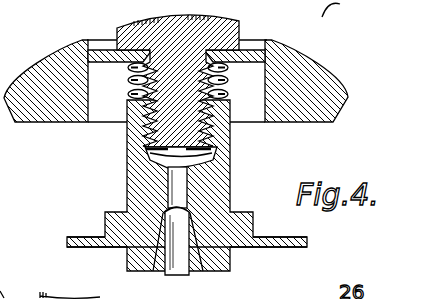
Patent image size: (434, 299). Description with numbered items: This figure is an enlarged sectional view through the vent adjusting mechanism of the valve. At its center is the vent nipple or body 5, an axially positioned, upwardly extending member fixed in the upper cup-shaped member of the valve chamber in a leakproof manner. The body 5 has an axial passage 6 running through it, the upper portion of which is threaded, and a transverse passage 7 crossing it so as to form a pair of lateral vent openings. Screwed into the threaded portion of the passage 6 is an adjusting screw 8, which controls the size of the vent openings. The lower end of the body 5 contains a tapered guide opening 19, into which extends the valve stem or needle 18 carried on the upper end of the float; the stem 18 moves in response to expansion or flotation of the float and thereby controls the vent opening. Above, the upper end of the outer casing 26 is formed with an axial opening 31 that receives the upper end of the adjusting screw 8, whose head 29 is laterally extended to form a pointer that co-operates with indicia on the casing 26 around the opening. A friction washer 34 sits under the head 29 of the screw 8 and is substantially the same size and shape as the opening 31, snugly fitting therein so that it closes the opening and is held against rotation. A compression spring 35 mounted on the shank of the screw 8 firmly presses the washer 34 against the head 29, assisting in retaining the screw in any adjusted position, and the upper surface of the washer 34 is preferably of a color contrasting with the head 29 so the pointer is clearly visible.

The vent nipple or body 5 is at (128, 178).
The axial passage 6 is at (182, 181).
The transverse passage 7 is at (185, 150).
The adjusting screw 8 is at (212, 38).
The valve stem or needle 18 is at (188, 276).
The tapered guide opening 19 is at (243, 206).
The outer casing 26 is at (193, 75).
The knob 29 is at (119, 27).
The axial opening 31 is at (296, 66).
The friction washer 34 is at (66, 54).
The compression spring 35 is at (132, 83).